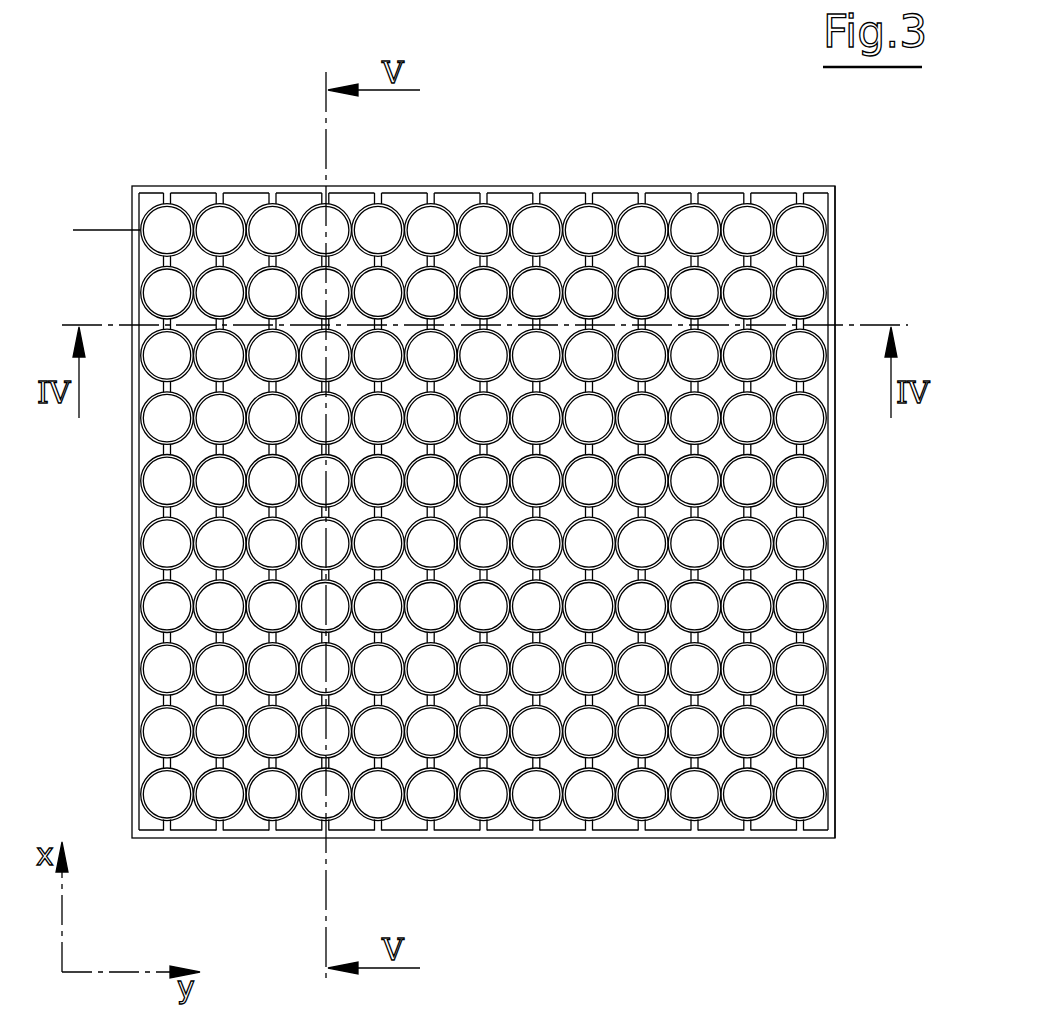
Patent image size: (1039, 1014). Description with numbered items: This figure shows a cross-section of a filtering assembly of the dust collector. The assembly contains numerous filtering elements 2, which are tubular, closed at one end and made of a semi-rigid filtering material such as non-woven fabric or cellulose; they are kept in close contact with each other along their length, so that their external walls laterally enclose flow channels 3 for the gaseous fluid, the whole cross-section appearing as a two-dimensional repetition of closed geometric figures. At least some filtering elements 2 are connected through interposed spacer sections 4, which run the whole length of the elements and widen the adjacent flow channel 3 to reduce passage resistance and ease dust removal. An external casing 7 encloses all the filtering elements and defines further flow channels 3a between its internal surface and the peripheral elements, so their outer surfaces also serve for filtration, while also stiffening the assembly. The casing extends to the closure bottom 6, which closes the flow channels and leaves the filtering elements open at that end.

The filtering elements 2 is at (270, 675).
The flow channels 3 is at (248, 455).
The further flow channels 3a is at (157, 262).
The spacer sections 4 is at (275, 570).
The closure bottom 6 is at (780, 172).
The external casing 7 is at (832, 703).